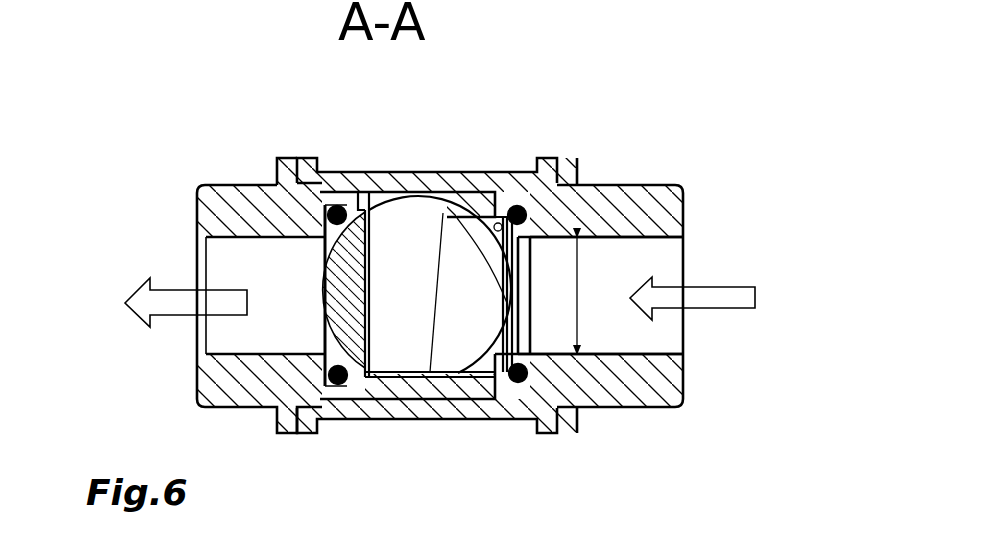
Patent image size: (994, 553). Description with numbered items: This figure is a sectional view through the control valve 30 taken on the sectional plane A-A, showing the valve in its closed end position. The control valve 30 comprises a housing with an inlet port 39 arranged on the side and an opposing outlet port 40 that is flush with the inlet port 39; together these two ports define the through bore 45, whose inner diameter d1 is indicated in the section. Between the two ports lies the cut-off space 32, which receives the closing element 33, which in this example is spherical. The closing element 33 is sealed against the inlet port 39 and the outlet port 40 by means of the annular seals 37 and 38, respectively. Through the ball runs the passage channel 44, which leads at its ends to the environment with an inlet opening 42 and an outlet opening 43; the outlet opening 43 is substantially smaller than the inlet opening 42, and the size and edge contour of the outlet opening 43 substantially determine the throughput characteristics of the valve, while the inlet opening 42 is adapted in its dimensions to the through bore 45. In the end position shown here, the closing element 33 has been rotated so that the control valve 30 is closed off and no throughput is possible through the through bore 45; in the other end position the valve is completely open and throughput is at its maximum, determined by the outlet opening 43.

The control valve 30 is at (648, 165).
The cut-off space 32 is at (400, 392).
The closing element 33 is at (323, 287).
The annular seal 37 is at (338, 386).
The annular seal 38 is at (524, 380).
The inlet port 39 is at (662, 224).
The outlet port 40 is at (215, 226).
The inlet opening 42 is at (464, 376).
The outlet opening 43 is at (458, 212).
The passage channel 44 is at (440, 284).
The through bore 45 is at (613, 242).